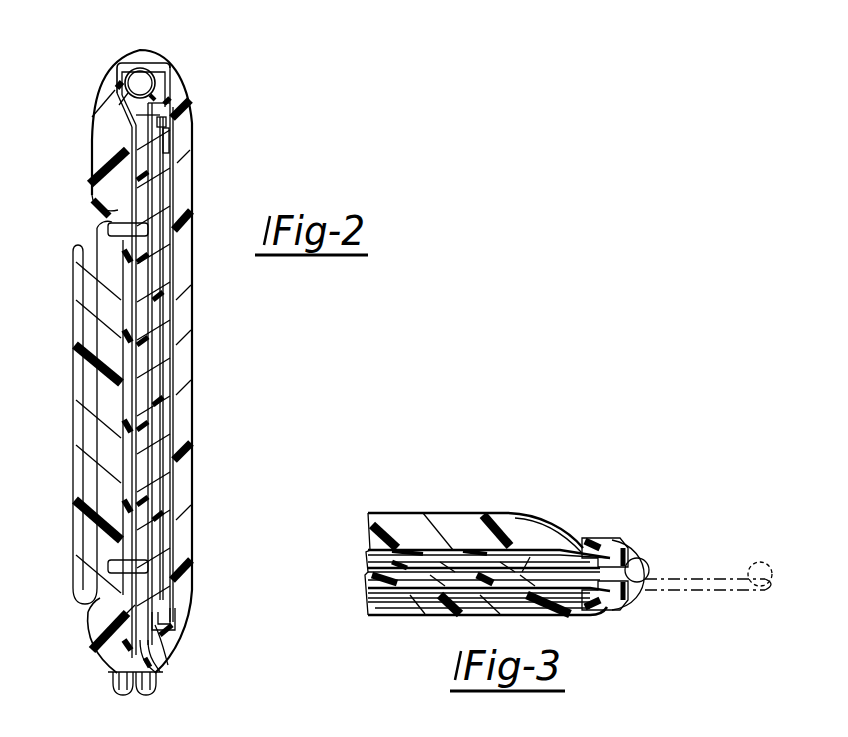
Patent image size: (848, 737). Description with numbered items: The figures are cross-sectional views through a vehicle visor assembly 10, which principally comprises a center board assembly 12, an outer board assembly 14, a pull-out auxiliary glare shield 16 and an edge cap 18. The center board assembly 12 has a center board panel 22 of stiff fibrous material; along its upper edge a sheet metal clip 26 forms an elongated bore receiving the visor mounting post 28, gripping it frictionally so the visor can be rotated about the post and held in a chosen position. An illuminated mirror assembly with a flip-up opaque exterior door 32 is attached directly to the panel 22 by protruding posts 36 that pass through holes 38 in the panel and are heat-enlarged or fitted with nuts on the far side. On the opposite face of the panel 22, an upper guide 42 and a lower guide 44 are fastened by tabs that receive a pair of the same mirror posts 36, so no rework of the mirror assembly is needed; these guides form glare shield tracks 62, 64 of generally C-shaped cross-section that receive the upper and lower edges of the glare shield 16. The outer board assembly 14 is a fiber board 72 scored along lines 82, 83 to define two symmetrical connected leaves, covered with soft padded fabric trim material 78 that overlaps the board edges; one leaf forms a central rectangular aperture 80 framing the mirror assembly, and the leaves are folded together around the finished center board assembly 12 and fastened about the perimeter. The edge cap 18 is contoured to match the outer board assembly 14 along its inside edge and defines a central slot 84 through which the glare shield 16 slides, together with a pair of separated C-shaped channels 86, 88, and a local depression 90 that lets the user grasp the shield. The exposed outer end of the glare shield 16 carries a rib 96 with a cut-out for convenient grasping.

In FIG. 2, the visor assembly 10 is at (203, 106).
In FIG. 2, the center board assembly 12 is at (150, 412).
In FIG. 3, the center board assembly 12 is at (362, 566).
In FIG. 2, the outer board assembly 14 is at (198, 460).
In FIG. 2, the auxiliary glare shield 16 is at (158, 368).
In FIG. 3, the auxiliary glare shield 16 is at (553, 606).
In FIG. 3, the edge cap 18 is at (614, 549).
In FIG. 2, the center board panel 22 is at (140, 537).
In FIG. 3, the center board panel 22 is at (392, 548).
In FIG. 2, the sheet metal clip 26 is at (152, 94).
In FIG. 2, the visor mounting post 28 is at (139, 72).
In FIG. 2, the flip-up opaque exterior door 32 is at (82, 604).
In FIG. 2, the protruding post 36 is at (108, 573).
In FIG. 2, the hole 38 is at (148, 232).
In FIG. 2, the upper guide 42 is at (168, 130).
In FIG. 2, the lower guide 44 is at (172, 633).
In FIG. 2, the glare shield track 62 is at (169, 141).
In FIG. 2, the glare shield track 64 is at (172, 624).
In FIG. 2, the fiber board 72 is at (172, 308).
In FIG. 3, the fiber board 72 is at (392, 602).
In FIG. 2, the padded fabric trim material 78 is at (188, 506).
In FIG. 3, the padded fabric trim material 78 is at (488, 514).
In FIG. 2, the central rectangular aperture 80 is at (110, 222).
In FIG. 2, the score line 82 is at (165, 63).
In FIG. 2, the score line 83 is at (118, 62).
In FIG. 3, the central slot 84 is at (649, 581).
In FIG. 3, the channel 86 is at (584, 539).
In FIG. 3, the channel 88 is at (612, 608).
In FIG. 3, the local depression 90 is at (646, 563).
In FIG. 3, the rib 96 is at (766, 563).